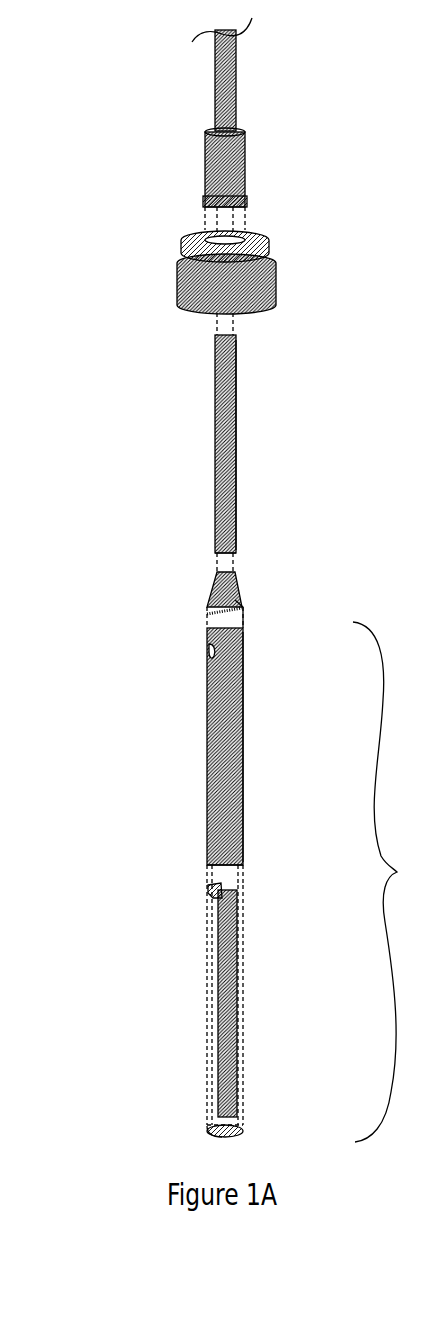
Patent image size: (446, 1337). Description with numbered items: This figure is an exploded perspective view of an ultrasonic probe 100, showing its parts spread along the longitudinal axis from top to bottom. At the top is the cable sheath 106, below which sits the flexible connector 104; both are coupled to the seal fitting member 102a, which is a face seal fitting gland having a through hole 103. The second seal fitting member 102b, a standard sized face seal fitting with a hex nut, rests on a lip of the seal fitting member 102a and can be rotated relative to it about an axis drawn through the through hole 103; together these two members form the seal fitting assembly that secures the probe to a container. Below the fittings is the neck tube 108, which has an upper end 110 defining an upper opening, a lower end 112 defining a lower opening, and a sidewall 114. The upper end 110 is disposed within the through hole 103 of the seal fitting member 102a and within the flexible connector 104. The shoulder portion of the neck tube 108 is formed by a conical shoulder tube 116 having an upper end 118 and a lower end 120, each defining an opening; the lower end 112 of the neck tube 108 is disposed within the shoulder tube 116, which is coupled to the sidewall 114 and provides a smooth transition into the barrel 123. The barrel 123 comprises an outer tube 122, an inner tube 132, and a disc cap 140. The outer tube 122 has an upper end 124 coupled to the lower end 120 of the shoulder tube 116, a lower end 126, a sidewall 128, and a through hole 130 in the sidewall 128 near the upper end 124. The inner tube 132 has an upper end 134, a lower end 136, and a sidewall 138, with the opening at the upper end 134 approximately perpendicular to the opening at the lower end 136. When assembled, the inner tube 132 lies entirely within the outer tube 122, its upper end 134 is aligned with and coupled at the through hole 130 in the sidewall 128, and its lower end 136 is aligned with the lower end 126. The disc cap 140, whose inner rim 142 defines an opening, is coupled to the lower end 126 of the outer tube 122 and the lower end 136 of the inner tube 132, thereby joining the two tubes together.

The ultrasonic probe 100 is at (105, 122).
The seal fitting member 102a is at (215, 242).
The seal fitting member 102b is at (264, 291).
The through hole 103 is at (220, 228).
The flexible connector 104 is at (232, 176).
The cable sheath 106 is at (232, 66).
The neck tube 108 is at (232, 416).
The upper end 110 is at (218, 338).
The lower end 112 is at (215, 553).
The sidewall 114 is at (235, 455).
The shoulder tube 116 is at (235, 592).
The upper end 118 is at (218, 570).
The lower end 120 is at (232, 615).
The outer tube 122 is at (230, 720).
The barrel 123 is at (396, 882).
The upper end 124 is at (220, 628).
The lower end 126 is at (225, 870).
The sidewall 128 is at (240, 770).
The through hole 130 is at (213, 654).
The inner tube 132 is at (228, 997).
The upper end 134 is at (210, 892).
The lower end 136 is at (240, 1123).
The sidewall 138 is at (243, 960).
The disc cap 140 is at (240, 1133).
The inner rim 142 is at (218, 1125).